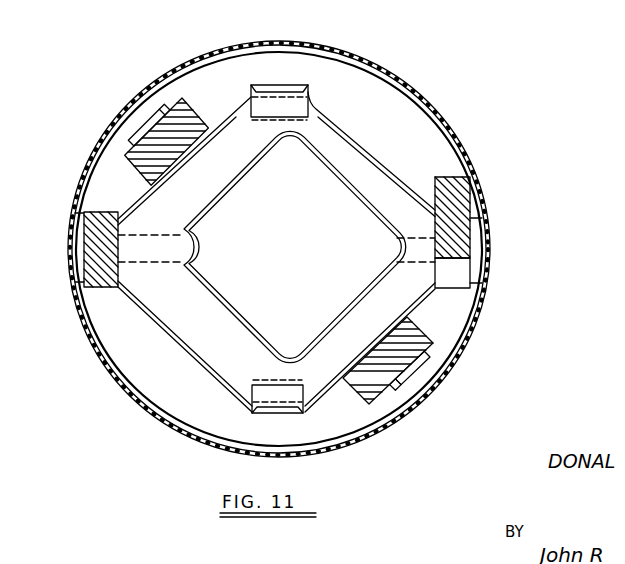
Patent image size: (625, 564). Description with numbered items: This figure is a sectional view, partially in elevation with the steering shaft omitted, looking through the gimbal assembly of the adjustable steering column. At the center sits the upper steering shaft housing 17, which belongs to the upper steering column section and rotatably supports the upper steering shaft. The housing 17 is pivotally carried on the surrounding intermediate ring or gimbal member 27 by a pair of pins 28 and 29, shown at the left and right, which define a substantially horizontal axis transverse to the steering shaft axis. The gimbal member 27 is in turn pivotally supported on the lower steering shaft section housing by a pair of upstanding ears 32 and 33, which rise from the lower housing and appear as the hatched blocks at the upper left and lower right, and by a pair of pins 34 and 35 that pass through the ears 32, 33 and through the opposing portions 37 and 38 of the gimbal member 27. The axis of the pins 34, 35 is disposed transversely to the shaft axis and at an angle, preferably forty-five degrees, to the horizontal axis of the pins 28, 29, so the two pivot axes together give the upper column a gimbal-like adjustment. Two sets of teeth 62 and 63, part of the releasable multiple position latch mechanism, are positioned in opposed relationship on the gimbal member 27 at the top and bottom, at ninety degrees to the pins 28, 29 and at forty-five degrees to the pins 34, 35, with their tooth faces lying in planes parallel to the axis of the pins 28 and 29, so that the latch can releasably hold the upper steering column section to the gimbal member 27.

The upper steering shaft housing 17 is at (88, 243).
The intermediate ring or gimbal member 27 is at (276, 271).
The pin 28 is at (157, 252).
The pin 29 is at (400, 247).
The upstanding ear 32 is at (178, 110).
The upstanding ear 33 is at (418, 342).
The pin 34 is at (148, 120).
The pin 35 is at (403, 385).
The opposing portion of the intermediate ring or gimbal member 37 is at (230, 133).
The opposing portion of the intermediate ring or gimbal member 38 is at (328, 390).
The set of teeth 62 is at (290, 78).
The set of teeth 63 is at (275, 408).